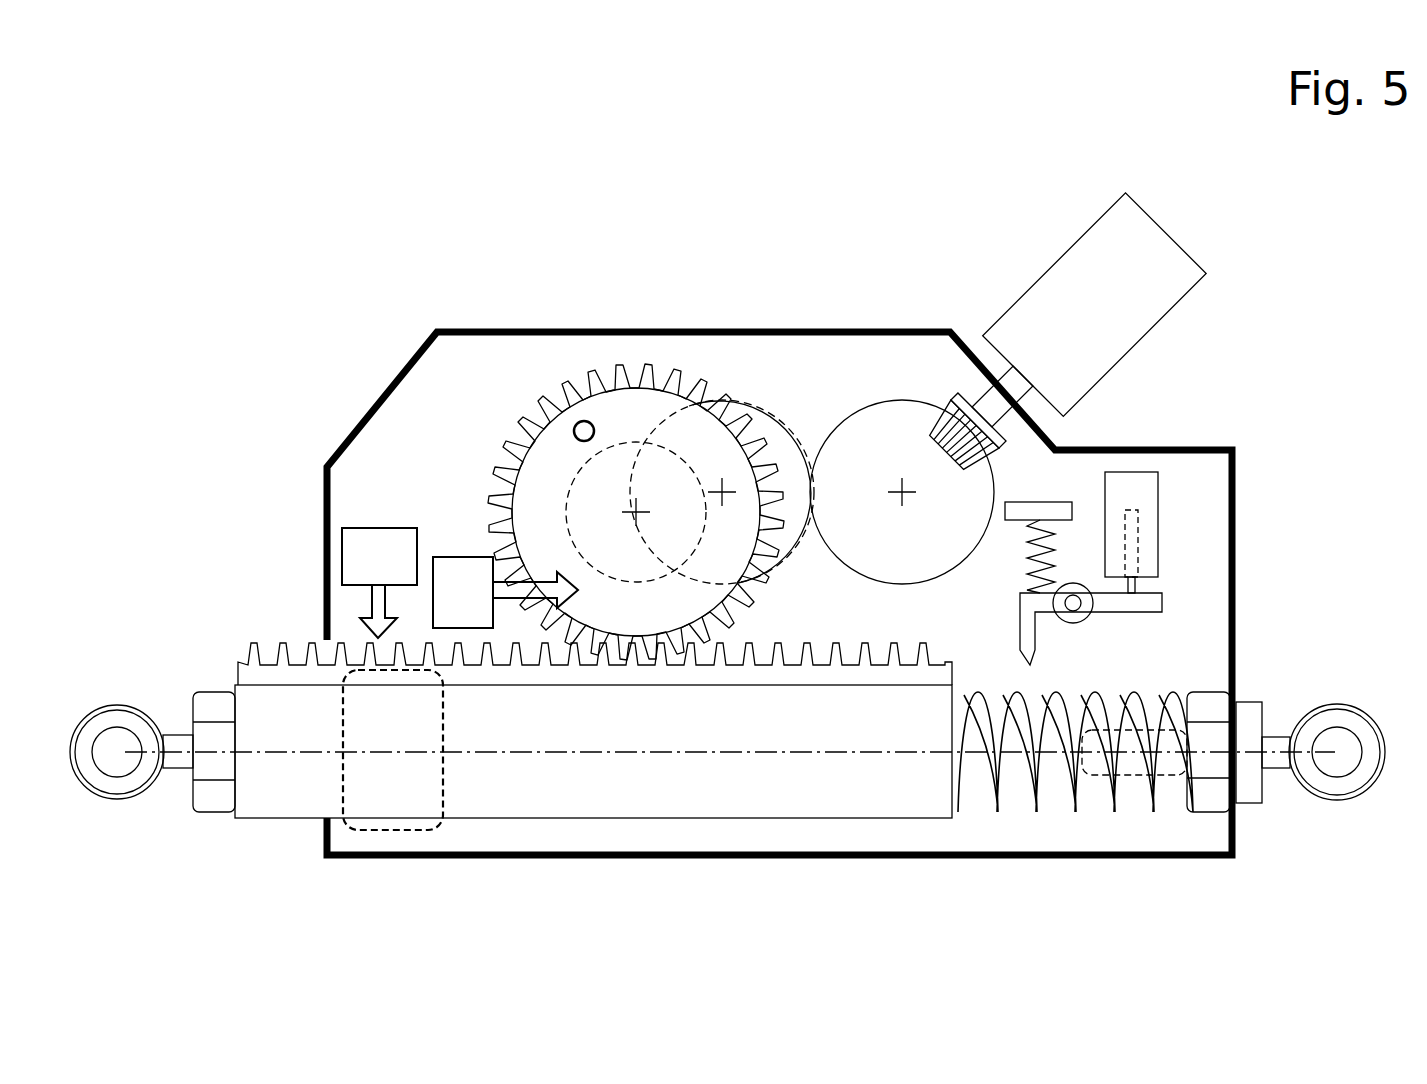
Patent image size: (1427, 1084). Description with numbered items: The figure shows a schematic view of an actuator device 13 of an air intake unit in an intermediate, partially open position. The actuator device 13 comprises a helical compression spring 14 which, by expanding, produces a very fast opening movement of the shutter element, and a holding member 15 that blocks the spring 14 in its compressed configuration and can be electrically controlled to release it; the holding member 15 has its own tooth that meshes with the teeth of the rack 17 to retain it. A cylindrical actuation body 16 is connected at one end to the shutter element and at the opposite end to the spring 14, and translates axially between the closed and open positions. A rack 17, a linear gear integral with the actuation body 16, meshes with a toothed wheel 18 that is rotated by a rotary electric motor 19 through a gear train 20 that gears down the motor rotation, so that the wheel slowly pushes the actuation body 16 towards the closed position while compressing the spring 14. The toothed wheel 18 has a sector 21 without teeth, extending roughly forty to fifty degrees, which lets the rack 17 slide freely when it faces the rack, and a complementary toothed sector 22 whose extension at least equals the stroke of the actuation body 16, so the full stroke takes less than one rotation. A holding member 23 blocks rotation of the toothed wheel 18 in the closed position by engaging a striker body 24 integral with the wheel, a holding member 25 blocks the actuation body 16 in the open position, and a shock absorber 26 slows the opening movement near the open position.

The actuator device 13 is at (143, 121).
The spring 14 is at (1058, 760).
The holding member 15 is at (1183, 537).
The actuation body 16 is at (478, 783).
The rack 17 is at (283, 660).
The toothed wheel 18 is at (635, 418).
The rotary electric motor 19 is at (1087, 307).
The gear train 20 is at (812, 372).
The sector without teeth 21 is at (517, 462).
The toothed sector 22 is at (780, 597).
The holding member 23 is at (505, 592).
The striker body 24 is at (574, 426).
The holding member 25 is at (379, 583).
The shock absorber 26 is at (393, 832).